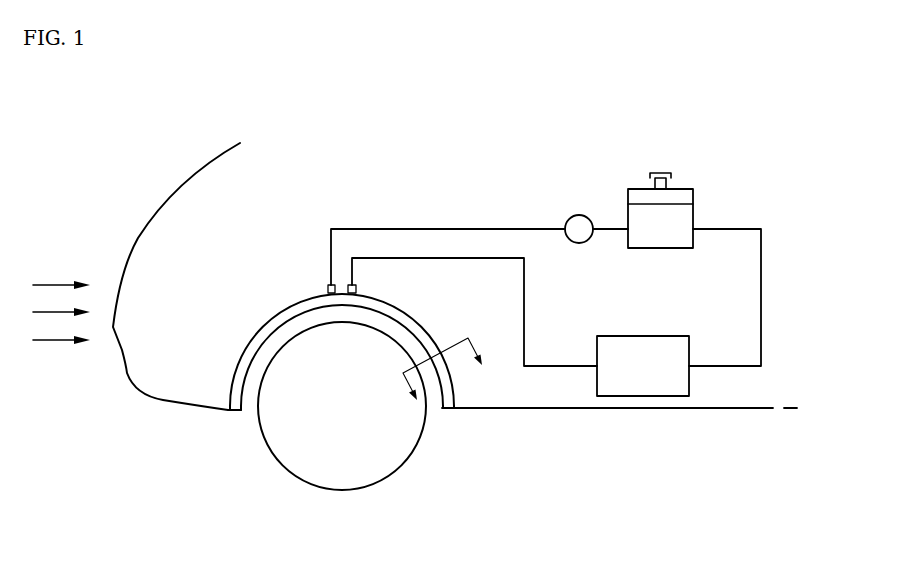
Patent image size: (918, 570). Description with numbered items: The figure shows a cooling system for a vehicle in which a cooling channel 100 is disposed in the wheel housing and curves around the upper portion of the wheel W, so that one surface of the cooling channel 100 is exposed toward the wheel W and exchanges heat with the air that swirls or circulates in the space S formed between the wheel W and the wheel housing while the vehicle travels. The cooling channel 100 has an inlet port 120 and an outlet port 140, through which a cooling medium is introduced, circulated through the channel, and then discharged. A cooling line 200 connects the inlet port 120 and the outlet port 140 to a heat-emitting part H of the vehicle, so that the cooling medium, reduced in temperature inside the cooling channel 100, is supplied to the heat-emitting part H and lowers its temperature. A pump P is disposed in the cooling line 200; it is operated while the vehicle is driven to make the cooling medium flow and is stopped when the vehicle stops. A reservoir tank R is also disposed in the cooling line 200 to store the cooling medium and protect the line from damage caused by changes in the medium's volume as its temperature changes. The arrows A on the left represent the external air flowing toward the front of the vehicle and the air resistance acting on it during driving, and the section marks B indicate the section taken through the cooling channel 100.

The cooling channel 100 is at (447, 391).
The inlet port 120 is at (328, 286).
The outlet port 140 is at (357, 288).
The cooling line 200 is at (600, 295).
The wheel W is at (293, 450).
The space S is at (279, 341).
The arrows A is at (61, 299).
The pump P is at (580, 215).
The reservoir tank R is at (677, 213).
The heat-emitting part H is at (648, 388).
The section line B- B is at (448, 377).